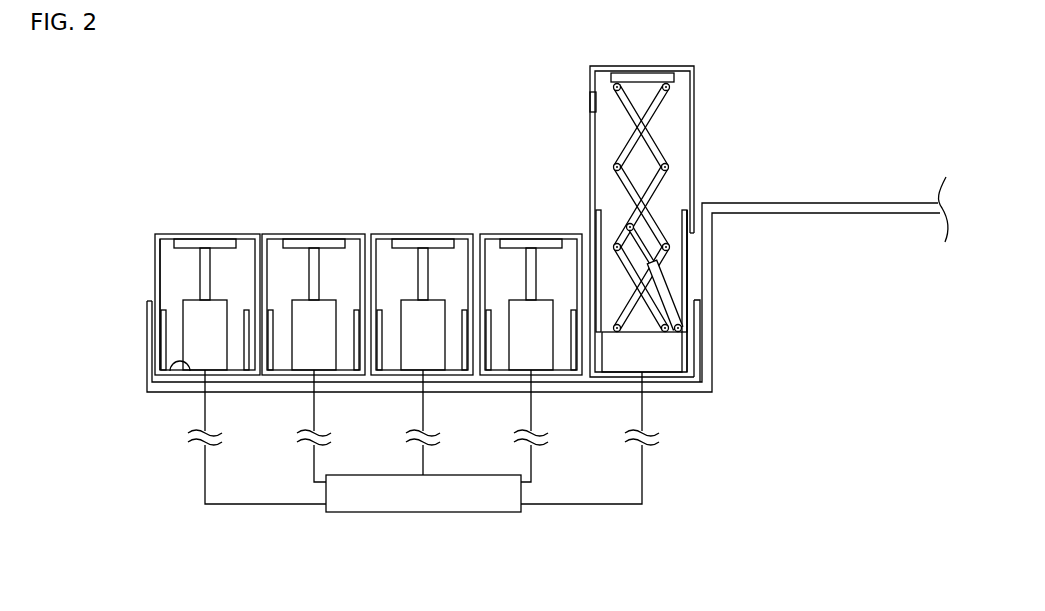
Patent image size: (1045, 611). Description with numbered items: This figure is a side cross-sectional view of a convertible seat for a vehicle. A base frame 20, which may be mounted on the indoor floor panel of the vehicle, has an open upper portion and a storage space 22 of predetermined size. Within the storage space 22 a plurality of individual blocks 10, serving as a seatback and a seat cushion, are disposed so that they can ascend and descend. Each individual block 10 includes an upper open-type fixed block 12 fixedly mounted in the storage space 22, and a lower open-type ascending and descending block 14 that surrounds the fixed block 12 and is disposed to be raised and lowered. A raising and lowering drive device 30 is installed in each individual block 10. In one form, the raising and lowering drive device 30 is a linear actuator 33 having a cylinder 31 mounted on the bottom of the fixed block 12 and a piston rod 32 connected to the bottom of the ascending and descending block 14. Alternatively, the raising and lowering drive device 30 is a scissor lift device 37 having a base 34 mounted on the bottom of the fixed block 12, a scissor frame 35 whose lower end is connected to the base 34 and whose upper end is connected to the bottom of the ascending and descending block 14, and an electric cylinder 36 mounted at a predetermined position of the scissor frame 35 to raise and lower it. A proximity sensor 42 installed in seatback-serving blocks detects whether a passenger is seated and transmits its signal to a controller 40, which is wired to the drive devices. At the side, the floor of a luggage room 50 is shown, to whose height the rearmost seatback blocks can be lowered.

The individual block 10 is at (435, 221).
The fixed block 12 is at (153, 287).
The ascending and descending block 14 is at (155, 258).
The base frame 20 is at (147, 317).
The storage space 22 is at (152, 290).
The raising and lowering drive device 30 is at (435, 235).
The cylinder 31 is at (199, 287).
The piston rod 32 is at (186, 342).
The linear actuator 33 is at (310, 318).
The base 34 is at (675, 357).
The scissor frame 35 is at (662, 260).
The electric cylinder 36 is at (670, 310).
The scissor lift device 37 is at (711, 223).
The controller 40 is at (412, 513).
The proximity sensor 42 is at (590, 101).
The luggage room 50 is at (834, 204).